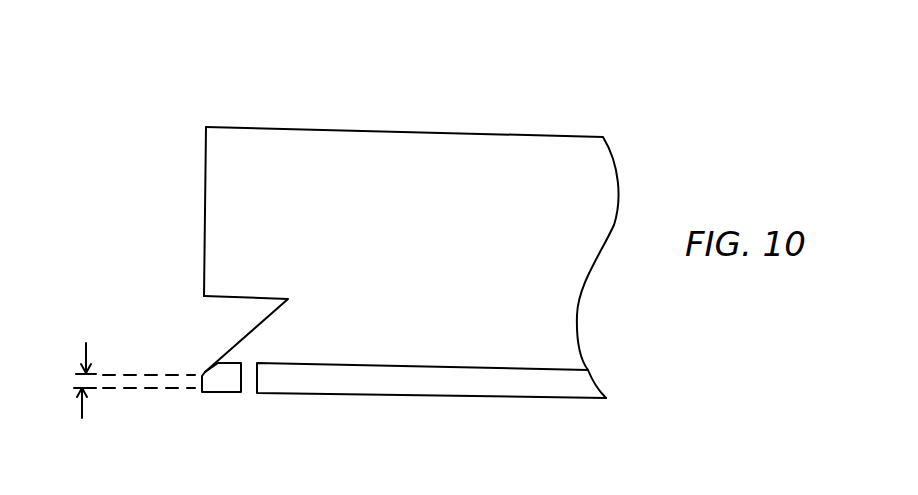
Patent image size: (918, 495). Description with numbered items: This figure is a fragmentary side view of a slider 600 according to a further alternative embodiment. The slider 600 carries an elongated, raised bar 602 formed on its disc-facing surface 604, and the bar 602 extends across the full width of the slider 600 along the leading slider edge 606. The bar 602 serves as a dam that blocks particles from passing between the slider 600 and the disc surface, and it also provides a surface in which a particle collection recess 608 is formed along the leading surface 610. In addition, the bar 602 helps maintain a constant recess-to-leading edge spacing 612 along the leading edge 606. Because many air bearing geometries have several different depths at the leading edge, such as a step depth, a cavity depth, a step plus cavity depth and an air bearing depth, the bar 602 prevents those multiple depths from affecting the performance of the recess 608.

The slider 600 is at (602, 125).
The raised bar 602 is at (222, 393).
The disc-facing surface 604 is at (370, 402).
The leading slider edge 606 is at (202, 390).
The recess 608 is at (210, 320).
The leading surface 610 is at (204, 162).
The recess-to-leading edge spacing 612 is at (82, 356).